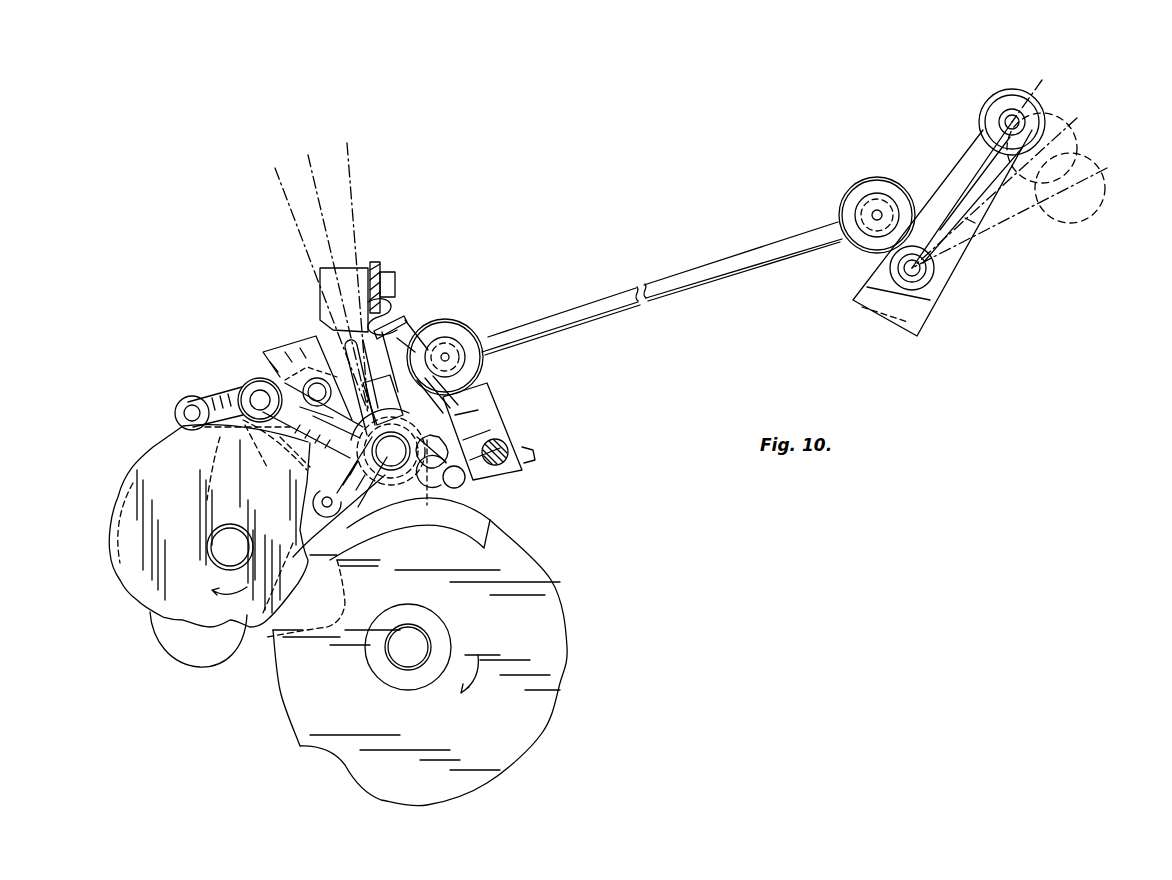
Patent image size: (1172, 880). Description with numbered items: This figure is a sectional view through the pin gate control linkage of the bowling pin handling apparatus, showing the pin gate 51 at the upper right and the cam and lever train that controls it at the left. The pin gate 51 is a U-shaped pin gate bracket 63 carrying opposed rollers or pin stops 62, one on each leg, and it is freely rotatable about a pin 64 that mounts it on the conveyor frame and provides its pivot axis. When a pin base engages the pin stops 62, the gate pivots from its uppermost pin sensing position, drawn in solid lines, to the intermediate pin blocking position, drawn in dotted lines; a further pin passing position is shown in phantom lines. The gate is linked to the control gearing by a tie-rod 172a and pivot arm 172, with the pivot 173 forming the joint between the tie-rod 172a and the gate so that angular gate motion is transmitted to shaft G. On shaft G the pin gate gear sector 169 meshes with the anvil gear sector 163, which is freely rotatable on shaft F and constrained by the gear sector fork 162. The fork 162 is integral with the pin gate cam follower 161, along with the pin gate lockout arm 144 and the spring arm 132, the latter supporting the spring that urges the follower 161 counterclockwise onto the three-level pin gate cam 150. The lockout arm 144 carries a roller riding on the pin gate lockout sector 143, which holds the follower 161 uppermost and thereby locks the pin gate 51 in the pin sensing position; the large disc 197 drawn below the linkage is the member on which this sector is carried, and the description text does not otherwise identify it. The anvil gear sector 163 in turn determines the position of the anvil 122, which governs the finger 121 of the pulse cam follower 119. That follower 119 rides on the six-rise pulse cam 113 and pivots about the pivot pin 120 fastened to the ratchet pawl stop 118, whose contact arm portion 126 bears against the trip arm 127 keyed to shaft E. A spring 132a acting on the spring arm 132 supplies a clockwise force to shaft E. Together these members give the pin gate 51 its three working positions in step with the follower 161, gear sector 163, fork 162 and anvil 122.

The pin gate 51 is at (942, 114).
The pin stops 62 is at (1005, 92).
The U-shaped pin gate bracket 63 is at (965, 168).
The pin 64 is at (920, 272).
The pulse cam 113 is at (177, 452).
The ratchet pawl stop 118 is at (239, 463).
The pulse cam follower 119 is at (184, 405).
The pivot pin 120 is at (294, 360).
The finger 121 is at (343, 330).
The anvil 122 is at (393, 375).
The contact arm portion 126 is at (276, 454).
The trip arm 127 is at (330, 449).
The spring arm 132 is at (462, 487).
The spring 132a is at (430, 322).
The pin gate lockout sector 143 is at (485, 522).
The pin gate lockout arm 144 is at (327, 505).
The pin gate cam 150 is at (247, 613).
The pin gate cam follower 161 is at (256, 383).
The gear sector fork 162 is at (412, 516).
The anvil gear sector 163 is at (430, 438).
The pin gate gear sector 169 is at (476, 397).
The pivot arm 172 is at (482, 404).
The tie-rod 172a is at (636, 290).
The pivot 173 is at (878, 206).
The disc 197 is at (547, 612).